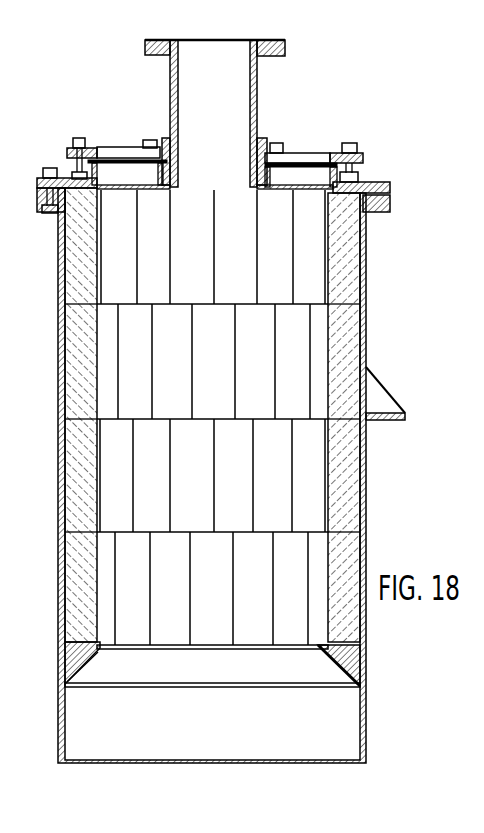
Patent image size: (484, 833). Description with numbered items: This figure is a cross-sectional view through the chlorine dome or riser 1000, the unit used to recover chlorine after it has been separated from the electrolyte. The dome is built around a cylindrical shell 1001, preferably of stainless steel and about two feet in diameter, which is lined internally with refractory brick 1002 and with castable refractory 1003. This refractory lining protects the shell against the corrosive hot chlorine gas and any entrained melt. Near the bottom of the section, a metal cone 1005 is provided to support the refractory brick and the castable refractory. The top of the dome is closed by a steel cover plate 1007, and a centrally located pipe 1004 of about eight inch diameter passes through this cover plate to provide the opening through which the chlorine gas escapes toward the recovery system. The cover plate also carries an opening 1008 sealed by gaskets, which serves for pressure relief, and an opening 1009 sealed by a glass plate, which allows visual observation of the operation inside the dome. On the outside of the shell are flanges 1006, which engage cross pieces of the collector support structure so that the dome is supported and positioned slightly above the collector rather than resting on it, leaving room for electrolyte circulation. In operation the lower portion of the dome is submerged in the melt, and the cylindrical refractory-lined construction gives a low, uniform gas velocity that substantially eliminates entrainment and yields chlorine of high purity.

The chlorine dome or riser 1000 is at (322, 107).
The shell 1001 is at (365, 347).
The refractory brick 1002 is at (72, 278).
The castable refractory 1003 is at (352, 667).
The pipe 1004 is at (244, 100).
The metal cone 1005 is at (87, 660).
The flanges 1006 is at (387, 407).
The steel cover plate 1007 is at (380, 183).
The opening sealed by gaskets 1008 is at (127, 153).
The opening sealed by a glass plate 1009 is at (303, 155).